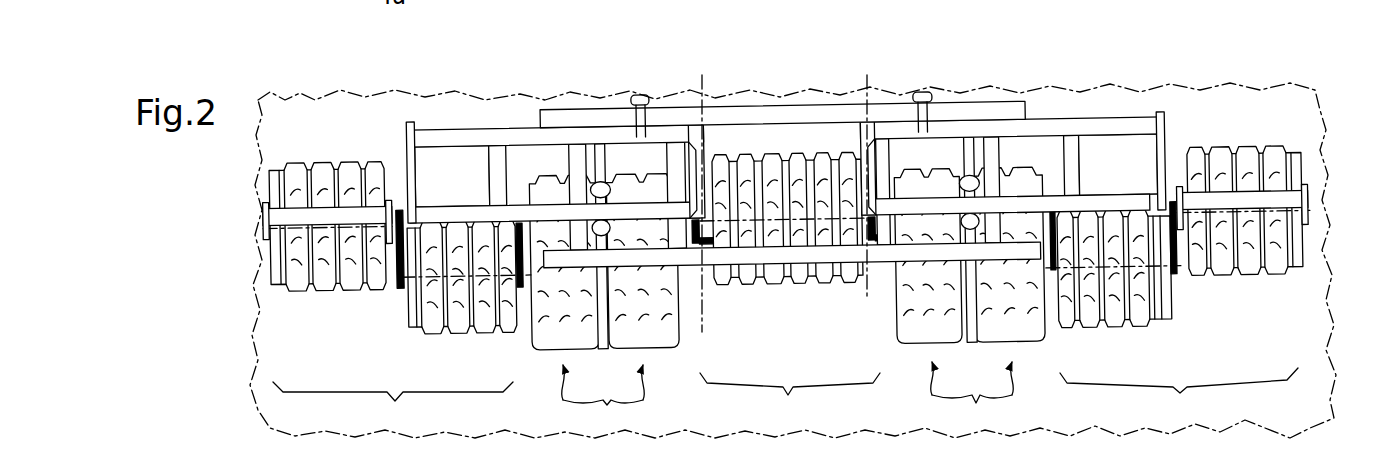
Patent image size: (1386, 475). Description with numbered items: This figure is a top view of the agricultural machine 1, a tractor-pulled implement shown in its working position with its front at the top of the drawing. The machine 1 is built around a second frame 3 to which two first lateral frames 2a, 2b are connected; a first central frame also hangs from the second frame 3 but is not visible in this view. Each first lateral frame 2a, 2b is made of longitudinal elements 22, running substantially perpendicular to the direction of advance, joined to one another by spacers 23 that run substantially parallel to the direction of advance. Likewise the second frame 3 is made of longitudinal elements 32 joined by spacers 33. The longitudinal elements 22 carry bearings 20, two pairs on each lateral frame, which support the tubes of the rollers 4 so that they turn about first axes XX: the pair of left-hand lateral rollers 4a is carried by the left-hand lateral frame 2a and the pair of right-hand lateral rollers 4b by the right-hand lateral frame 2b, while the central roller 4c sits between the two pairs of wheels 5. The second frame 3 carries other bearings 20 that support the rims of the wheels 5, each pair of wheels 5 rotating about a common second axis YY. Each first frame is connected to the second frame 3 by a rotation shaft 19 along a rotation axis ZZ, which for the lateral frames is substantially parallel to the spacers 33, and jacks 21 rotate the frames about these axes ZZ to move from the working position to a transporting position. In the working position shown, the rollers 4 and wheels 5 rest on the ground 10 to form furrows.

The agricultural machine 1 is at (273, 343).
The first left-hand lateral frame 2a is at (520, 122).
The first right-hand lateral frame 2b is at (1055, 123).
The second frame 3 is at (777, 118).
The roller 4 is at (323, 147).
The pair of left-hand lateral rollers 4a is at (393, 407).
The pair of right-hand lateral rollers 4b is at (1179, 395).
The central roller 4c is at (790, 401).
The wheel 5 is at (788, 399).
The ground 10 is at (1312, 419).
The rotation shaft 19 is at (713, 145).
The bearing 20 is at (265, 240).
The jack 21 is at (643, 95).
The longitudinal element 22 is at (460, 130).
The spacer 23 is at (490, 167).
The longitudinal element 32 is at (713, 113).
The spacer 33 is at (577, 157).
The first axis XX is at (267, 190).
The second axis YY is at (543, 257).
The rotation axis ZZ is at (702, 75).